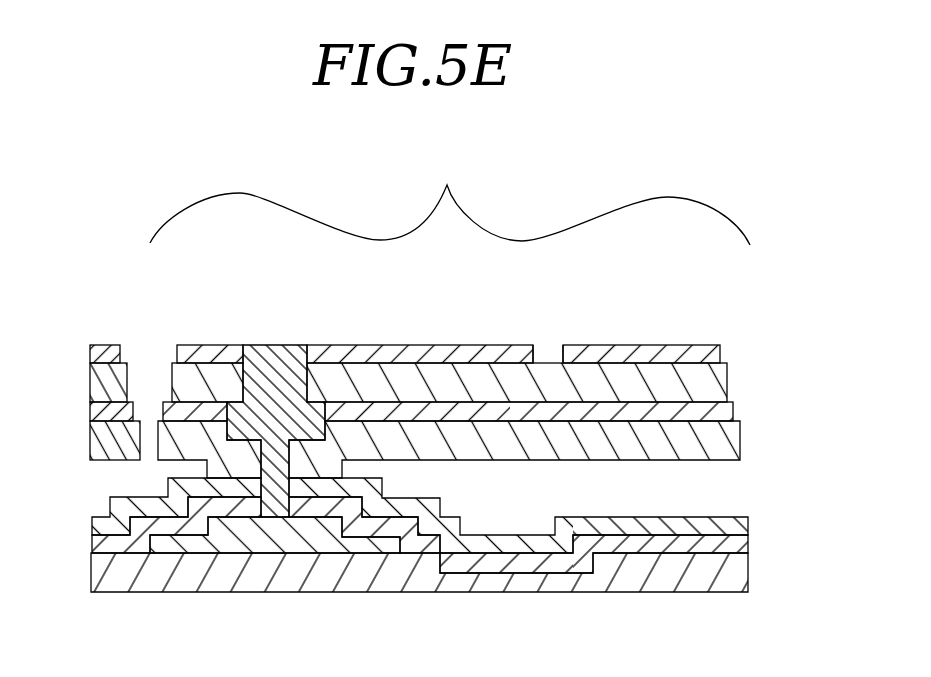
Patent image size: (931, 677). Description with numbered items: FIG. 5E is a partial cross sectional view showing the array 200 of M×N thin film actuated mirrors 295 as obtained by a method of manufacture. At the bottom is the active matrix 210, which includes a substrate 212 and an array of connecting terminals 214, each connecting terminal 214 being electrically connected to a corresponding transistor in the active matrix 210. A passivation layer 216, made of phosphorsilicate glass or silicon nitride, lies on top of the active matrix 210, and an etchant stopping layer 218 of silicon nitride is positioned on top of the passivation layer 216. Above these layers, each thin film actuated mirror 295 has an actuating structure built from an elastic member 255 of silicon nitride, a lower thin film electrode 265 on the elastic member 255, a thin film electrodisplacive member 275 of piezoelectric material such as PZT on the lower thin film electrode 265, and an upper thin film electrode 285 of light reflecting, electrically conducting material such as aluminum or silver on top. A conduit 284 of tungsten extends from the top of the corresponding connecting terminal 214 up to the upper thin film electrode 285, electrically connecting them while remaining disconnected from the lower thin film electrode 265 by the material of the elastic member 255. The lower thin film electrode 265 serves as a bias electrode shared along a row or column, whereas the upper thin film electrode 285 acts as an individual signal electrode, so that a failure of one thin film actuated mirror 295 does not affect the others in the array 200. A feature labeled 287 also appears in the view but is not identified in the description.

The array of M×N thin film actuated mirrors 200 is at (712, 142).
The active matrix 210 is at (83, 516).
The substrate 212 is at (732, 580).
The connecting terminal 214 is at (265, 535).
The passivation layer 216 is at (735, 547).
The etchant stopping layer 218 is at (745, 523).
The elastic member 255 is at (733, 438).
The lower thin film electrode 265 is at (733, 405).
The thin film electrodisplacive member 275 is at (725, 368).
The conduit 284 is at (268, 352).
The upper thin film electrode 285 is at (718, 348).
The opening in pixel electrode 287 is at (547, 358).
The thin film actuated mirror 295 is at (450, 196).